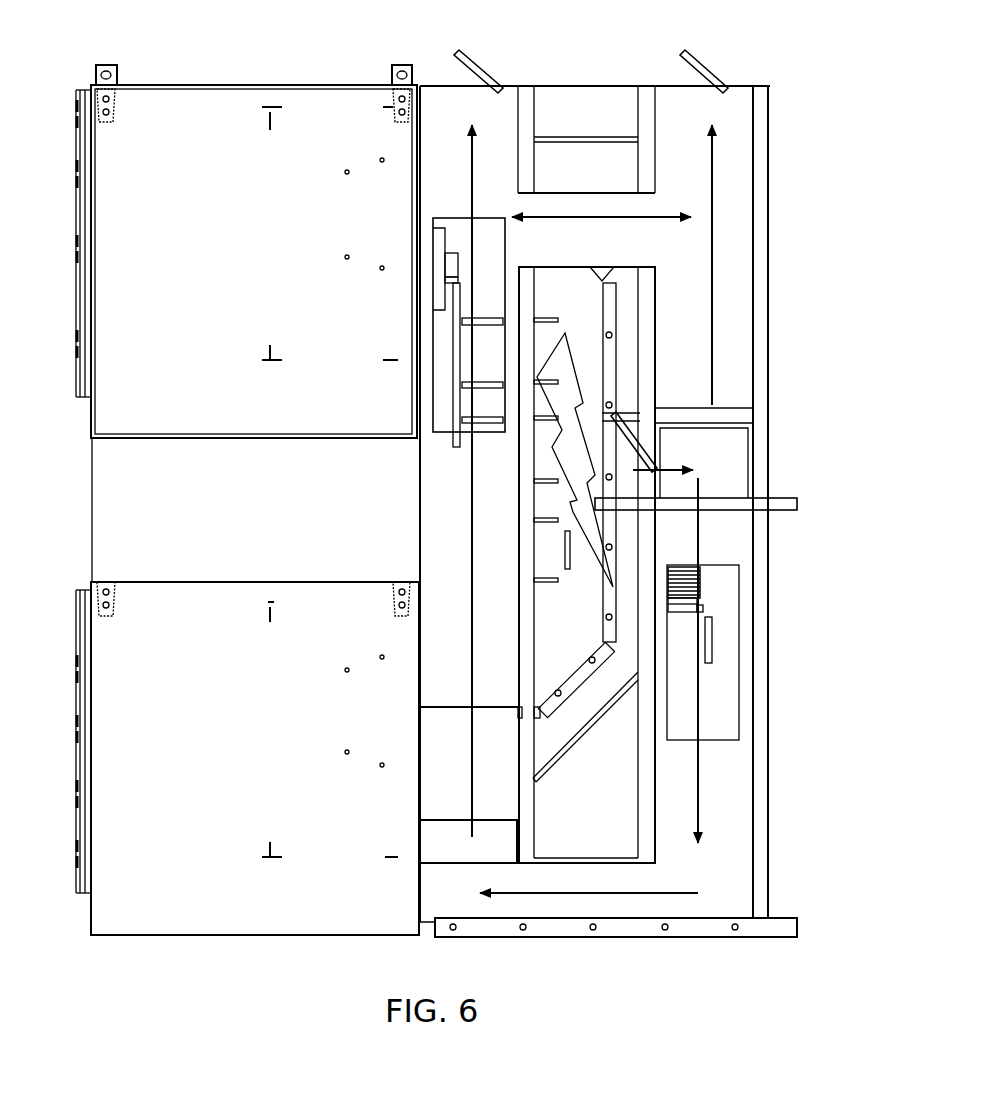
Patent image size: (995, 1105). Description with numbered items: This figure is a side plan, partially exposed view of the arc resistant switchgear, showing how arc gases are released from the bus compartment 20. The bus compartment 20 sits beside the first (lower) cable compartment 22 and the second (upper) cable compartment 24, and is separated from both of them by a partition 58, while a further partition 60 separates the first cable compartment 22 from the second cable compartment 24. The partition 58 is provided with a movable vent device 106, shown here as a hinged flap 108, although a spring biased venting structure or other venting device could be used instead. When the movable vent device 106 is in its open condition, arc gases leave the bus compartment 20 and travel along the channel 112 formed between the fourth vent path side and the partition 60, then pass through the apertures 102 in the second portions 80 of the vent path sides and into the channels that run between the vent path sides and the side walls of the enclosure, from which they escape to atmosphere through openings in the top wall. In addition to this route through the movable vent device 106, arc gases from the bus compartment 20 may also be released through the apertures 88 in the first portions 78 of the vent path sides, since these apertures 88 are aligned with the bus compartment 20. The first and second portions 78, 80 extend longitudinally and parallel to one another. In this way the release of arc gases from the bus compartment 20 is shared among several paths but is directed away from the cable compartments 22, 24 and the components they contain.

The bus compartment 20 is at (571, 647).
The first (lower) cable compartment 22 is at (617, 725).
The second (upper) cable compartment 24 is at (625, 335).
The partition 58 is at (613, 567).
The partition 60 is at (735, 503).
The first portion 78 is at (420, 688).
The second portion 80 is at (727, 860).
The apertures 88 is at (455, 240).
The apertures 102 is at (720, 445).
The movable vent device 106 is at (483, 62).
The hinged flap 108 is at (672, 412).
The channel 112 is at (745, 485).